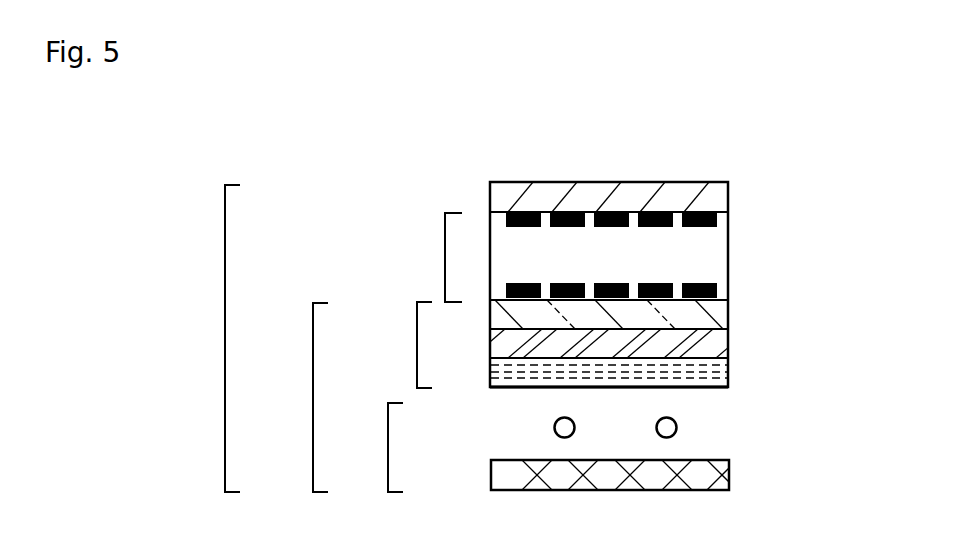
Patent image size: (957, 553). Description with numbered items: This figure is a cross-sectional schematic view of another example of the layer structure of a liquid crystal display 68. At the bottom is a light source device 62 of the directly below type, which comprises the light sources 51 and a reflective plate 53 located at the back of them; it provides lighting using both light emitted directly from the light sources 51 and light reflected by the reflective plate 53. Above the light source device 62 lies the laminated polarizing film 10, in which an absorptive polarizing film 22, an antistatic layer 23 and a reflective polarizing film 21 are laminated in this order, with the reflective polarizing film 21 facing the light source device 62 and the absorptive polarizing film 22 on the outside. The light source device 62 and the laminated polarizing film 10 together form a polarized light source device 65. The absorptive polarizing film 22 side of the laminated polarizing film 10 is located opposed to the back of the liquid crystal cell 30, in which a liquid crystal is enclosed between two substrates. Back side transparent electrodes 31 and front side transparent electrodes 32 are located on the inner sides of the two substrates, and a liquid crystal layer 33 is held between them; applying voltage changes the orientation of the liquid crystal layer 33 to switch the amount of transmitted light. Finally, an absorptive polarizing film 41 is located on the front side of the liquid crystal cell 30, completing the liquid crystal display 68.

The absorptive polarizing film 41 is at (729, 195).
The front side transparent electrodes 32 is at (720, 222).
The liquid crystal layer 33 is at (715, 256).
The back side transparent electrodes 31 is at (720, 290).
The liquid crystal cell 30 is at (427, 257).
The absorptive polarizing film 22 is at (743, 313).
The reflective polarizing film 21 is at (743, 343).
The antistatic layer 23 is at (743, 372).
The laminated polarizing film 10 is at (398, 345).
The light sources 51 is at (553, 427).
The reflective plate 53 is at (732, 472).
The light source device 62 is at (368, 447).
The polarized light source device 65 is at (294, 397).
The liquid crystal display 68 is at (206, 338).